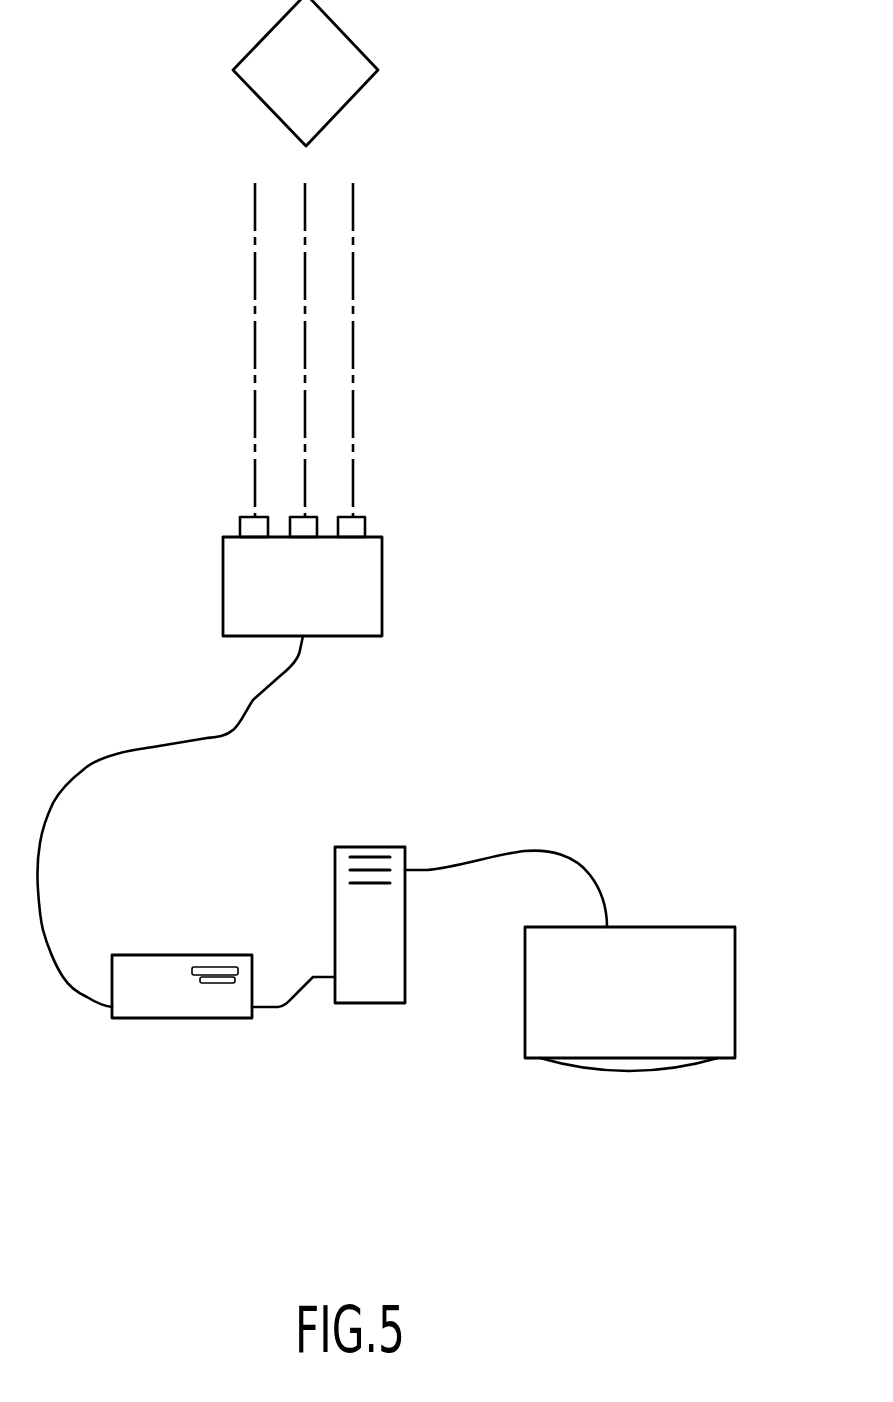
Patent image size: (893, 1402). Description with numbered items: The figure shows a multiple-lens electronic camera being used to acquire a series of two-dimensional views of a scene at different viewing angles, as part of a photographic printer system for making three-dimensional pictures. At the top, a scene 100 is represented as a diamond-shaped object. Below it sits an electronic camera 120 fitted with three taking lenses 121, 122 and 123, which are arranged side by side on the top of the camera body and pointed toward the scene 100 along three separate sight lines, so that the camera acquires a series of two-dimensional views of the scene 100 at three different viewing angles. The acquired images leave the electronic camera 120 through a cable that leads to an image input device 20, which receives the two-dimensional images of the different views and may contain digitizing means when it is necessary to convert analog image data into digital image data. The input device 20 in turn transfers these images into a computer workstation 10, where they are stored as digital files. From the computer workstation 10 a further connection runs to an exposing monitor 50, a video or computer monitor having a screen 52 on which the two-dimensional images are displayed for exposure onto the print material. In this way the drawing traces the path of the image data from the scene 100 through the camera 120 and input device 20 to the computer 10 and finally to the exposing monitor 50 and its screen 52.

The scene 100 is at (347, 55).
The electronic camera 120 is at (375, 625).
The taking lens 121 is at (240, 528).
The taking lens 122 is at (307, 520).
The taking lens 123 is at (363, 523).
The image input device 20 is at (135, 963).
The computer workstation 10 is at (390, 972).
The exposing monitor 50 is at (717, 937).
The screen 52 is at (650, 1065).